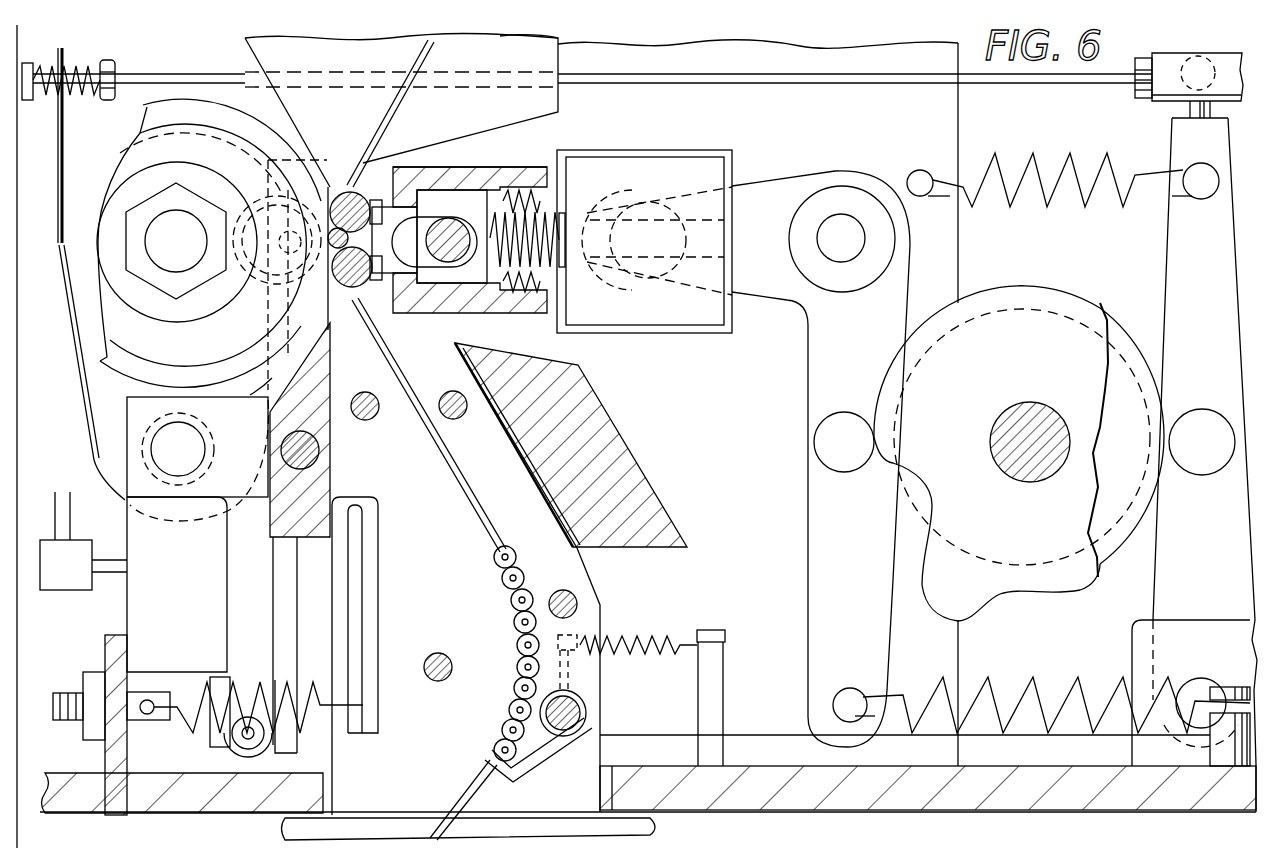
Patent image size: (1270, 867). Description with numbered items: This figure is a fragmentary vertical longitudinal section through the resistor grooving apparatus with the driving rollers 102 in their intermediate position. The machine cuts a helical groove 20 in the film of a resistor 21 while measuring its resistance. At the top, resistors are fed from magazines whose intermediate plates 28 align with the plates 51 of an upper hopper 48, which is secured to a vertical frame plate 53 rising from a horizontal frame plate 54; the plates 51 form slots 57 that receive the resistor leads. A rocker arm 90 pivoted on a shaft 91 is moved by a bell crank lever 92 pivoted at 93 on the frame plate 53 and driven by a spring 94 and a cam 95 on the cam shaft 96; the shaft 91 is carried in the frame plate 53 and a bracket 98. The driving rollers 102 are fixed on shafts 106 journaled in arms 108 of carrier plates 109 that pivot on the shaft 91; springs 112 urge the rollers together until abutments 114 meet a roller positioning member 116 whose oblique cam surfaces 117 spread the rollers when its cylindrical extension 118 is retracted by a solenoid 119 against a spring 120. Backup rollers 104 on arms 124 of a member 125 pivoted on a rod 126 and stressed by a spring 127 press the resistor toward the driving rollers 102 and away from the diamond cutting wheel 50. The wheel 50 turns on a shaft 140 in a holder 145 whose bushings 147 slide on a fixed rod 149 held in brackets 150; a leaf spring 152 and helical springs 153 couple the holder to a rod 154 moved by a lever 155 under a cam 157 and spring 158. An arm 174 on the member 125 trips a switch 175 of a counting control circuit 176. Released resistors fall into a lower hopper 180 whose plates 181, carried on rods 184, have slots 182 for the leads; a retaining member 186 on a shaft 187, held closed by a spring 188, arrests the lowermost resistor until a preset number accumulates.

The helical groove 20 is at (513, 622).
The resistor 21 is at (268, 278).
The intermediate plates 28 is at (297, 827).
The upper hopper 48 is at (560, 62).
The diamond cutting wheel 50 is at (100, 347).
The hopper plates 51 is at (460, 57).
The vertical frame plate 53 is at (917, 127).
The horizontal frame plate 54 is at (67, 790).
The slots 57 is at (412, 60).
The rocker arm 90 is at (548, 155).
The shaft 91 is at (458, 167).
The bell crank lever 92 is at (806, 335).
The pivot 93 is at (839, 232).
The spring 94 is at (1043, 697).
The cam 95 is at (1050, 308).
The cam shaft 96 is at (1030, 425).
The bracket 98 is at (617, 487).
The driving rollers 102 is at (338, 228).
The backup rollers 104 is at (262, 192).
The shafts 106 is at (348, 192).
The arms 108 is at (368, 165).
The carrier plates 109 is at (492, 168).
The springs 112 is at (550, 210).
The abutments 114 is at (428, 205).
The roller positioning member 116 is at (422, 284).
The oblique cam surfaces 117 is at (378, 198).
The cylindrical extension 118 is at (563, 266).
The solenoid 119 is at (662, 170).
The spring 120 is at (555, 232).
The arms 124 is at (255, 393).
The roller supporting member 125 is at (330, 478).
The rod 126 is at (320, 458).
The spring 127 is at (245, 682).
The shaft 140 is at (173, 262).
The holder 145 is at (88, 298).
The bushings 147 is at (140, 430).
The fixed rod 149 is at (167, 453).
The brackets 150 is at (140, 413).
The leaf spring 152 is at (63, 148).
The helical springs 153 is at (50, 65).
The rod 154 is at (176, 73).
The lever 155 is at (1165, 97).
The cam 157 is at (1122, 365).
The spring 158 is at (1062, 196).
The arm 174 is at (270, 617).
The switch 175 is at (147, 593).
The control circuit 176 is at (62, 590).
The lower hopper 180 is at (527, 461).
The lower hopper plates 181 is at (380, 595).
The slot 182 is at (458, 482).
The rods 184 is at (375, 412).
The retaining member 186 is at (532, 762).
The shaft 187 is at (580, 713).
The spring 188 is at (653, 634).